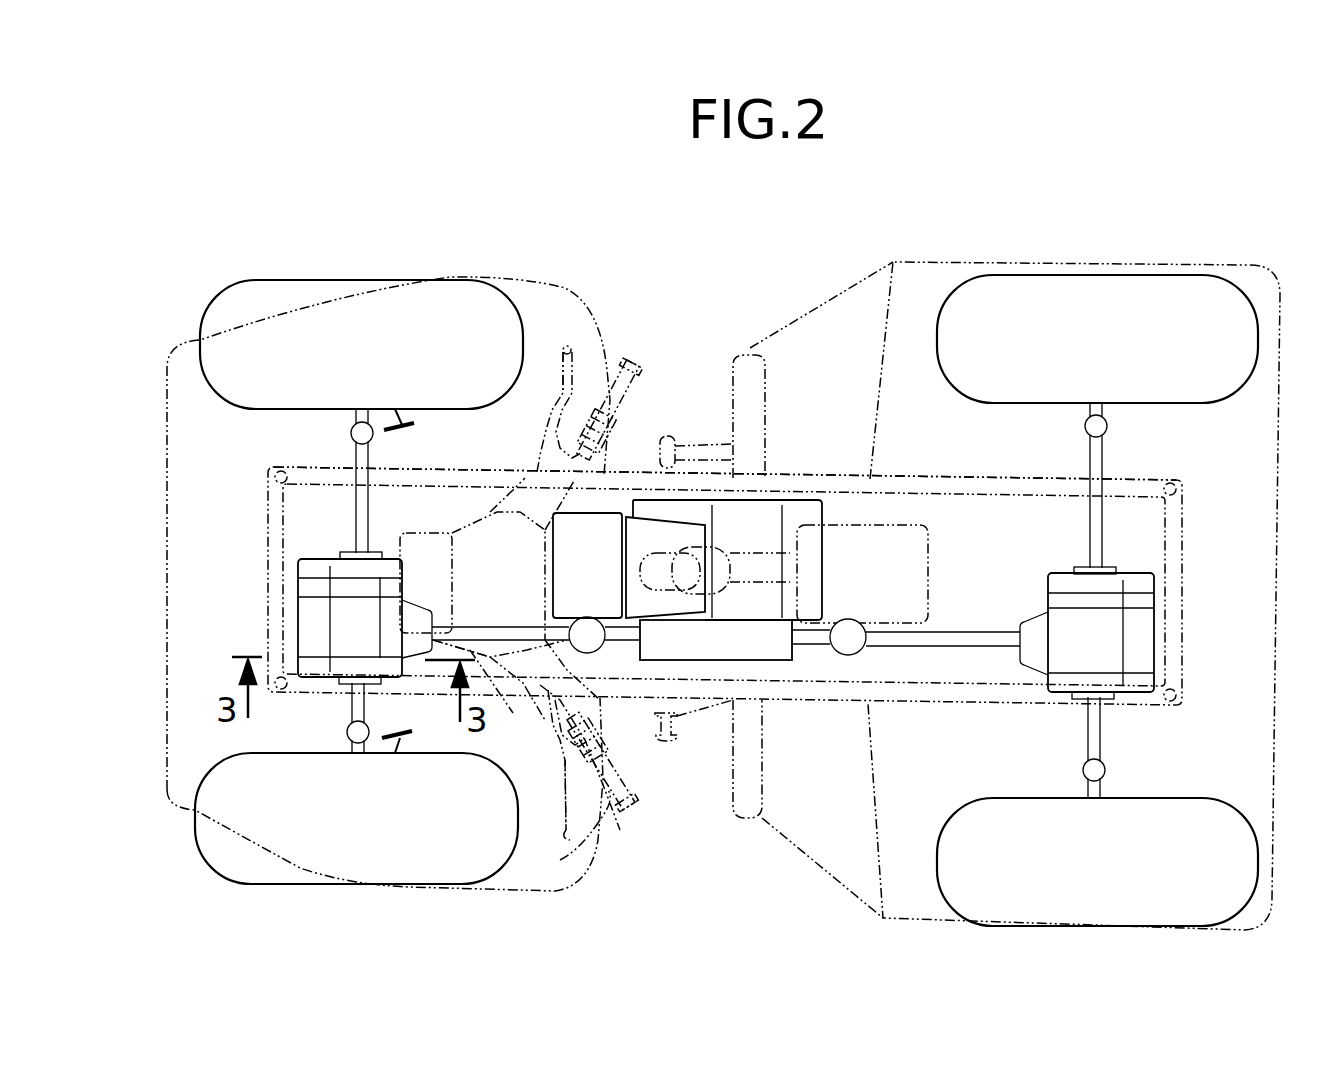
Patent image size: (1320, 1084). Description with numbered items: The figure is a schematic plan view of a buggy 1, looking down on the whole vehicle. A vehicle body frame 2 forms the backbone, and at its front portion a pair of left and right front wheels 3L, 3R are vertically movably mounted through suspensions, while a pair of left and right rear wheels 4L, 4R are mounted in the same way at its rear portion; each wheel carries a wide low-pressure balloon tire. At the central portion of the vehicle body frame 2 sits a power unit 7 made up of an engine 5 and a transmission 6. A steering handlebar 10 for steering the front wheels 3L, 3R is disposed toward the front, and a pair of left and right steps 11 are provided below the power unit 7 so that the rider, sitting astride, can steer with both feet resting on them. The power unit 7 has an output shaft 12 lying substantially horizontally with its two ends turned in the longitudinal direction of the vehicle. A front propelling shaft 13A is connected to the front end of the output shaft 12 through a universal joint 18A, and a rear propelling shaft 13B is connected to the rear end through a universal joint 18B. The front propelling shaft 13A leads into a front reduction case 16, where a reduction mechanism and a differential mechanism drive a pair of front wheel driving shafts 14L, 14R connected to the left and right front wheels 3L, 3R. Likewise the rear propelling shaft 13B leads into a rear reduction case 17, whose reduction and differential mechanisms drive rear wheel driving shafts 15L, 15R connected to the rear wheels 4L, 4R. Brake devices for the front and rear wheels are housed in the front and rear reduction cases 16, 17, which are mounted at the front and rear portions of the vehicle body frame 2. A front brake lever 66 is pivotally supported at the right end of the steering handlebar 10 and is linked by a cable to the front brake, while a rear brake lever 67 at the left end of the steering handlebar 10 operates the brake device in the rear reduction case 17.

The buggy 1 is at (784, 272).
The vehicle body frame 2 is at (798, 472).
The right front wheel 3R is at (263, 290).
The left front wheel 3L is at (262, 867).
The right rear wheel 4R is at (1113, 295).
The left rear wheel 4L is at (1083, 910).
The engine 5 is at (590, 532).
The transmission 6 is at (744, 527).
The power unit 7 is at (687, 443).
The steering handlebar 10 is at (518, 706).
The step 11 is at (733, 431).
The output shaft 12 is at (813, 640).
The front propelling shaft 13A is at (508, 630).
The rear propelling shaft 13B is at (950, 637).
The right front wheel driving shaft 14R is at (355, 498).
The left front wheel driving shaft 14L is at (353, 708).
The right rear wheel driving shaft 15R is at (1098, 472).
The left rear wheel driving shaft 15L is at (1093, 727).
The front reduction case 16 is at (308, 607).
The rear reduction case 17 is at (1137, 645).
The front universal joint 18A is at (588, 648).
The rear universal joint 18B is at (850, 642).
The front brake lever 66 is at (573, 292).
The rear brake lever 67 is at (610, 820).